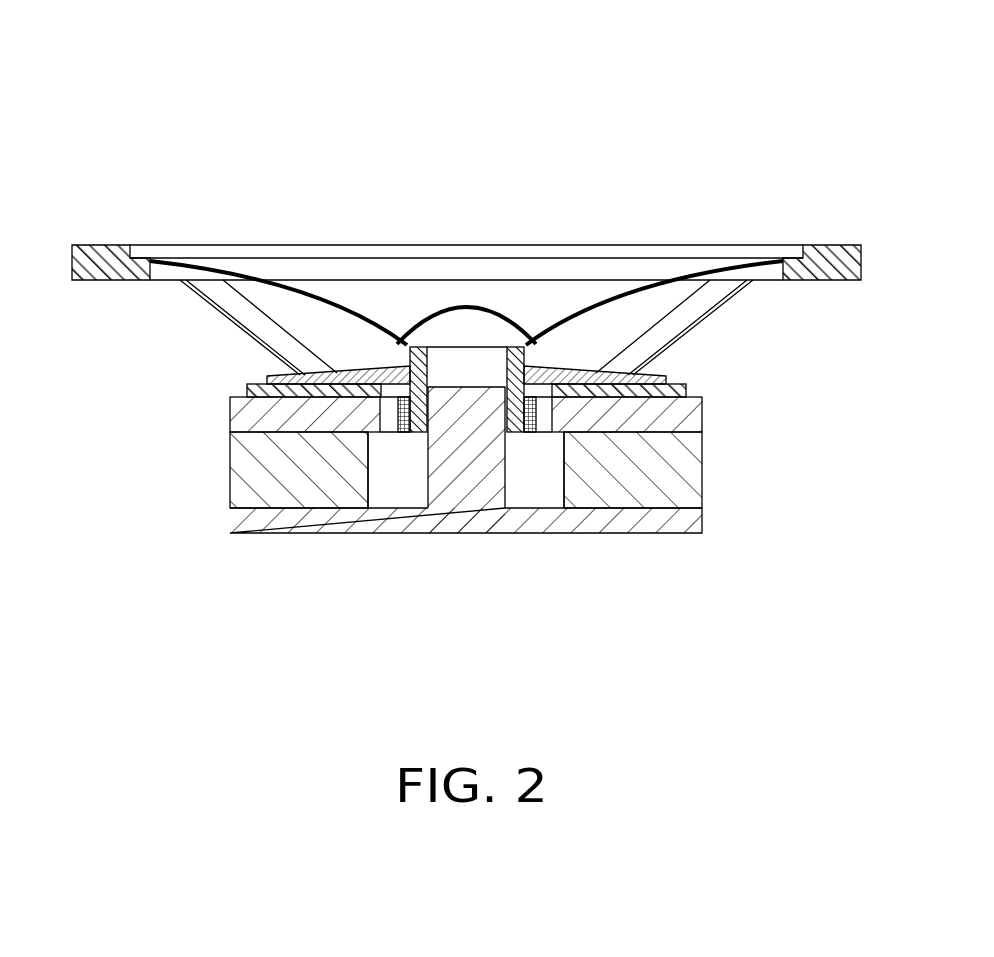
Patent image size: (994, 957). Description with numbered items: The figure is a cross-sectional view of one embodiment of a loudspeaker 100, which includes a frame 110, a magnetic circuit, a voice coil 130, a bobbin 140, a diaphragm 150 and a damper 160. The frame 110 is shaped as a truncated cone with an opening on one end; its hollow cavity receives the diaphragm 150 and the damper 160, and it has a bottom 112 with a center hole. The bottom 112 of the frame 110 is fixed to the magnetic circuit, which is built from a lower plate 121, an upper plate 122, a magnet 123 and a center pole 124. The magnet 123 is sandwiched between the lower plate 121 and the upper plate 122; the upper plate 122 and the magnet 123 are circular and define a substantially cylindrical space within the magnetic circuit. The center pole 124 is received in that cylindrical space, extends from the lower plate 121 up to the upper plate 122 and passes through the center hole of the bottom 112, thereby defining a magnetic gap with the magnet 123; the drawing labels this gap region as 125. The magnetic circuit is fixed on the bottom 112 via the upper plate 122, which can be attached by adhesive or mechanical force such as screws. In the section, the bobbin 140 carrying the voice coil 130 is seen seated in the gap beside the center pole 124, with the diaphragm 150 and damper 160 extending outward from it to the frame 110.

The loudspeaker 100 is at (468, 75).
The frame 110 is at (104, 245).
The bottom 112 is at (683, 385).
The lower plate 121 is at (690, 524).
The upper plate 122 is at (685, 410).
The magnet 123 is at (680, 467).
The center pole 124 is at (450, 472).
The magnetic gap 125 is at (517, 457).
The voice coil 130 is at (398, 414).
The bobbin 140 is at (407, 358).
The diaphragm 150 is at (340, 300).
The damper 160 is at (667, 374).